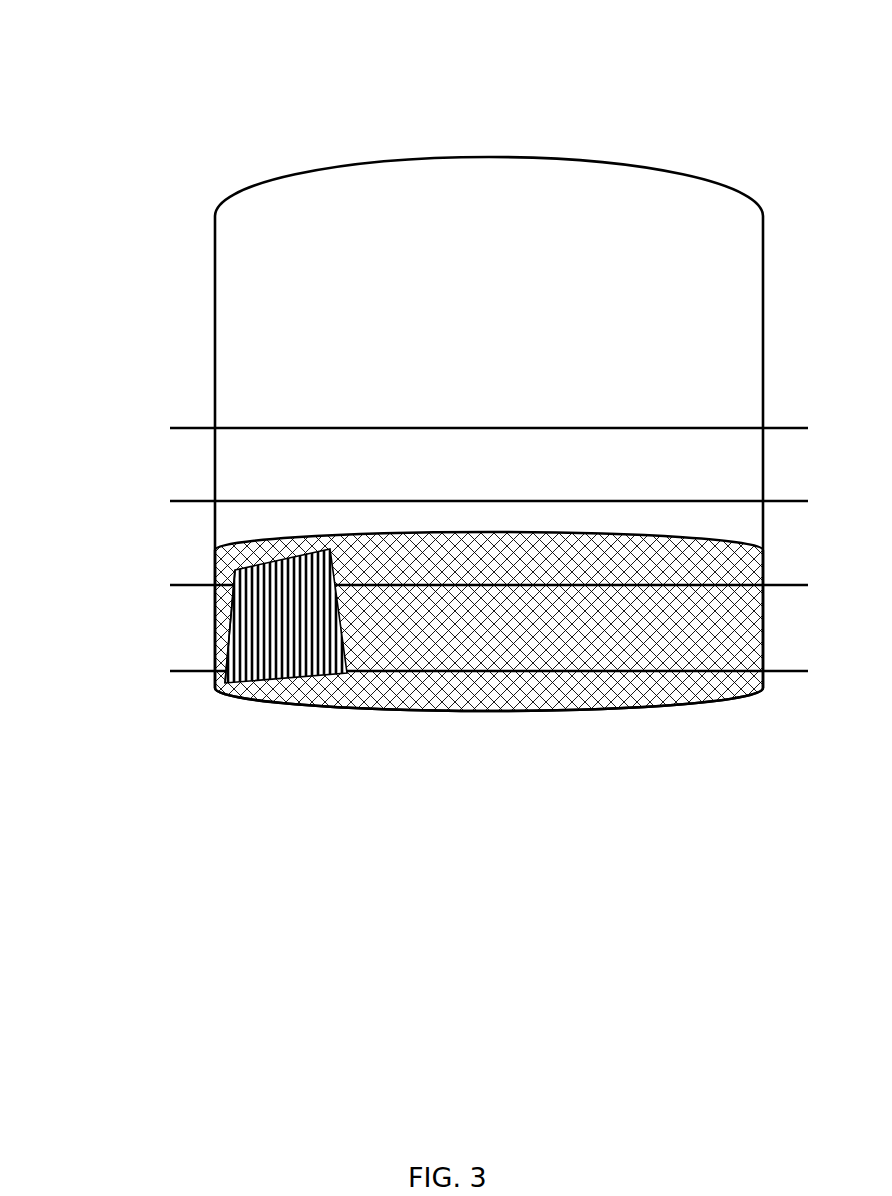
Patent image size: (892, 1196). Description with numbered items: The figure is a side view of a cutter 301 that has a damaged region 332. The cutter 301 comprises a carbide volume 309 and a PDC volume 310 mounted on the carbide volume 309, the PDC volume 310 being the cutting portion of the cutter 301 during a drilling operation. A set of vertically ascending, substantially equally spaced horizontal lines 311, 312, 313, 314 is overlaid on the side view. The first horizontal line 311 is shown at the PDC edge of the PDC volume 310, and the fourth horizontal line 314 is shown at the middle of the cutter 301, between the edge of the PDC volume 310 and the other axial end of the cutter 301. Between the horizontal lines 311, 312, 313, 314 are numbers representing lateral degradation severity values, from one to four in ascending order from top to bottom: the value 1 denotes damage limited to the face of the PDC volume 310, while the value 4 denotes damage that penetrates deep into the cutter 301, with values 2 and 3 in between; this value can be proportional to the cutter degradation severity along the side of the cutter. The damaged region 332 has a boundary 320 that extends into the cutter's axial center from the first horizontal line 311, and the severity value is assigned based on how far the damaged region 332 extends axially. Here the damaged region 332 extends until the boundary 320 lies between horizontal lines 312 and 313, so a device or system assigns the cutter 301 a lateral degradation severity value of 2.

The cutter 301 is at (297, 172).
The carbide volume 309 is at (508, 372).
The PDC volume 310 is at (507, 630).
The first horizontal line 311 is at (203, 673).
The horizontal line 312 is at (200, 583).
The horizontal line 313 is at (200, 502).
The fourth horizontal line 314 is at (200, 428).
The boundary 320 is at (222, 649).
The damaged region 332 is at (312, 631).
The lateral degradation severity value 1 is at (799, 621).
The lateral degradation severity value 2 is at (799, 541).
The lateral degradation severity value 3 is at (799, 465).
The lateral degradation severity value 4 is at (798, 365).